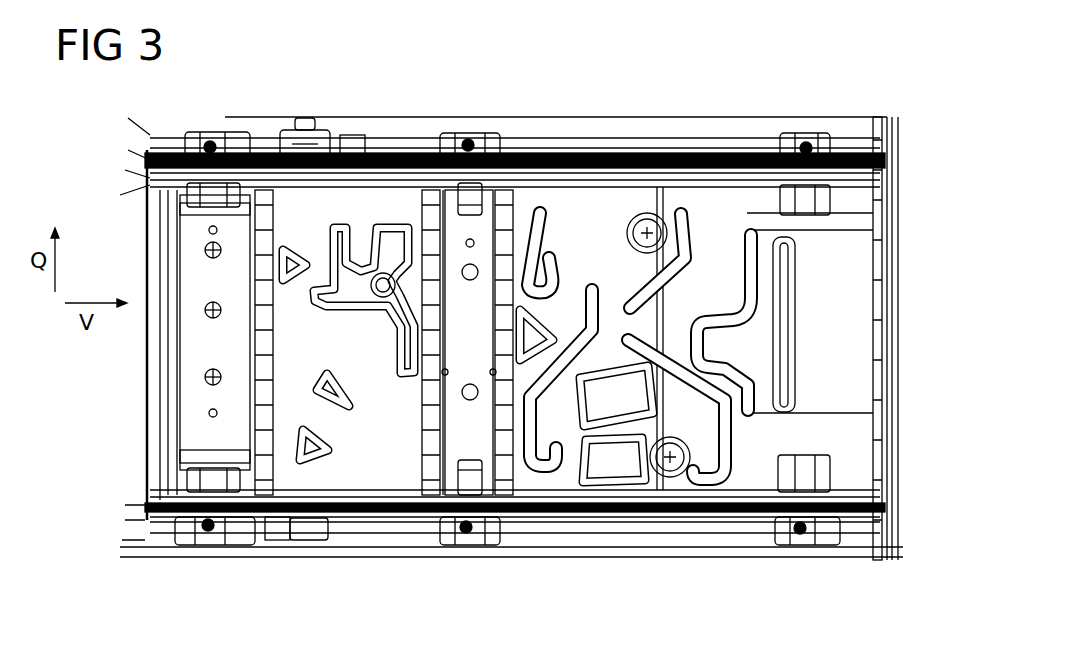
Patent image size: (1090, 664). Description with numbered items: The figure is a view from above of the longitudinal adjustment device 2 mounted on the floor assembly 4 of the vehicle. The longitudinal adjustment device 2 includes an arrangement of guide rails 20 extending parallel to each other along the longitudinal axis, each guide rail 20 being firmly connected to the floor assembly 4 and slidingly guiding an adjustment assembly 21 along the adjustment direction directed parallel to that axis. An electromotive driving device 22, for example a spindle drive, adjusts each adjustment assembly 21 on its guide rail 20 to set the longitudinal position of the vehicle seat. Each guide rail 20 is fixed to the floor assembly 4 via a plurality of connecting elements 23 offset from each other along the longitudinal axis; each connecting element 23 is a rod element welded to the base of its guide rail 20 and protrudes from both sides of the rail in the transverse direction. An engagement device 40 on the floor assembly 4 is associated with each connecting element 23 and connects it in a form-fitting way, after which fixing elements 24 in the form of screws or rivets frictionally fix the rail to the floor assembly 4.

The longitudinal adjustment device 2 is at (582, 143).
The floor assembly 4 is at (188, 345).
The guide rail 20 is at (408, 150).
The adjustment assembly 21 is at (345, 152).
The electromotive driving device 22 is at (304, 138).
The connecting element 23 is at (232, 140).
The fixing element 24 is at (210, 143).
The engagement device 40 is at (472, 200).